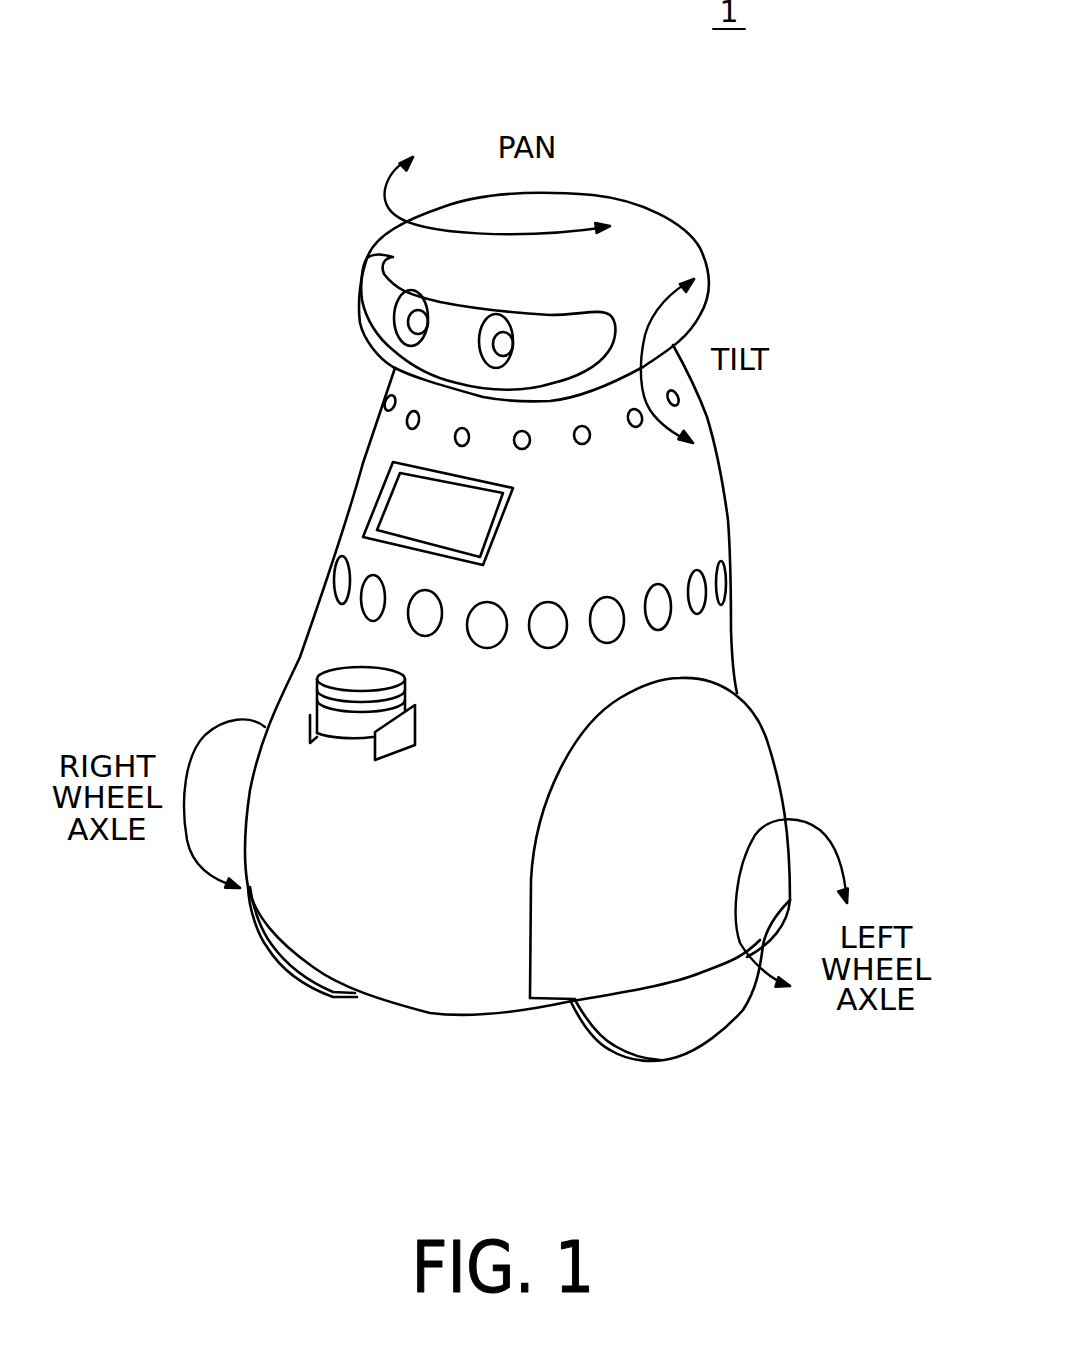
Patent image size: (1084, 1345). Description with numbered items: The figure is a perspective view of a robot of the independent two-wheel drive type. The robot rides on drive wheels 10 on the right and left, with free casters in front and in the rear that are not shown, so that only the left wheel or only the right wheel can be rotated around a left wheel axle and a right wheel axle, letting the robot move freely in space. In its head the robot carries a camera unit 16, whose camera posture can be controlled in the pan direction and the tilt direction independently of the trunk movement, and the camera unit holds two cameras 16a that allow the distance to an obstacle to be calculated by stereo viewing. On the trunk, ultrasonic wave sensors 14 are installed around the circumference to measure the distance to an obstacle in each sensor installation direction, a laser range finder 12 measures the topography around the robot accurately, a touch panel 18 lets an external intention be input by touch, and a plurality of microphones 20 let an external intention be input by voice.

The drive wheels 10 is at (308, 978).
The laser range finder 12 is at (317, 695).
The ultrasonic wave sensors 14 is at (660, 607).
The camera unit 16 is at (640, 237).
The cameras 16a is at (500, 348).
The touch panel 18 is at (460, 513).
The microphones 20 is at (408, 420).